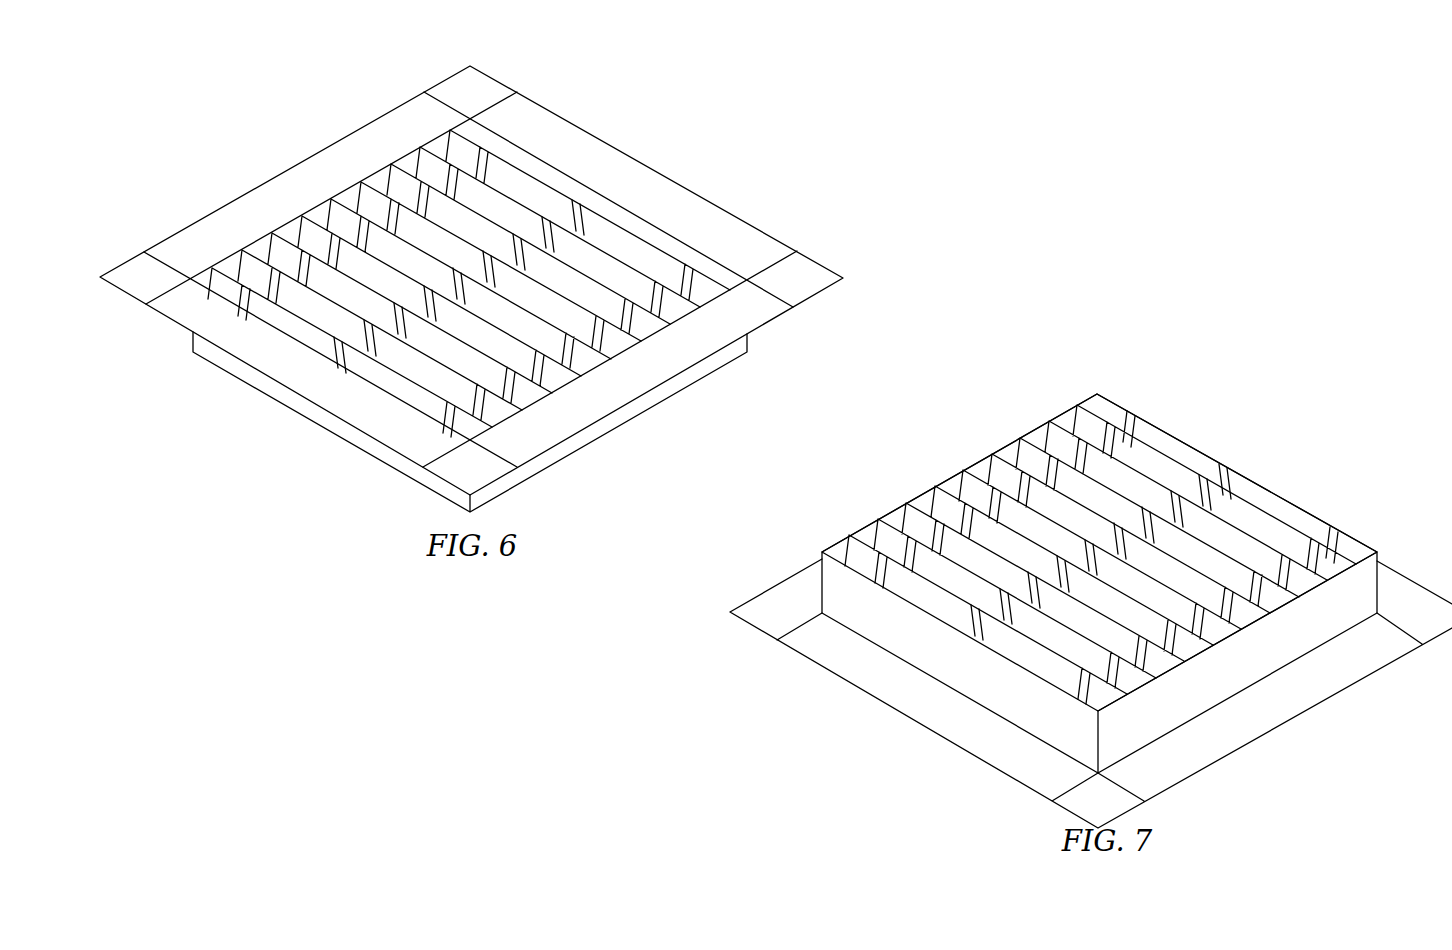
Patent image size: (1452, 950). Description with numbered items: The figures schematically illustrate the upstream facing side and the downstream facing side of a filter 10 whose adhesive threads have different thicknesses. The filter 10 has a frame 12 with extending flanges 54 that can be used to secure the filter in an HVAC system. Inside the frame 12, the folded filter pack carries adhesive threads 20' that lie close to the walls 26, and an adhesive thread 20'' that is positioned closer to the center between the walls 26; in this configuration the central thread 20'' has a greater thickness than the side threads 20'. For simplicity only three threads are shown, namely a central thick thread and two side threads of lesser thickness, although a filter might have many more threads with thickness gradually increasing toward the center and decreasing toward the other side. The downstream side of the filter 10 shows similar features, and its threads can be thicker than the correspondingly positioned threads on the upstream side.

In FIG. 6, the filter 10 is at (624, 104).
In FIG. 7, the filter 10 is at (1225, 403).
In FIG. 6, the frame 12 is at (750, 282).
In FIG. 7, the frame 12 is at (815, 613).
In FIG. 6, the adhesive threads 20' is at (492, 249).
In FIG. 7, the adhesive threads 20' is at (1126, 524).
In FIG. 6, the adhesive thread 20'' is at (499, 242).
In FIG. 7, the adhesive thread 20'' is at (1135, 517).
In FIG. 6, the walls 26 is at (338, 196).
In FIG. 7, the walls 26 is at (940, 478).
In FIG. 6, the flanges 54 is at (652, 190).
In FIG. 7, the flanges 54 is at (860, 665).